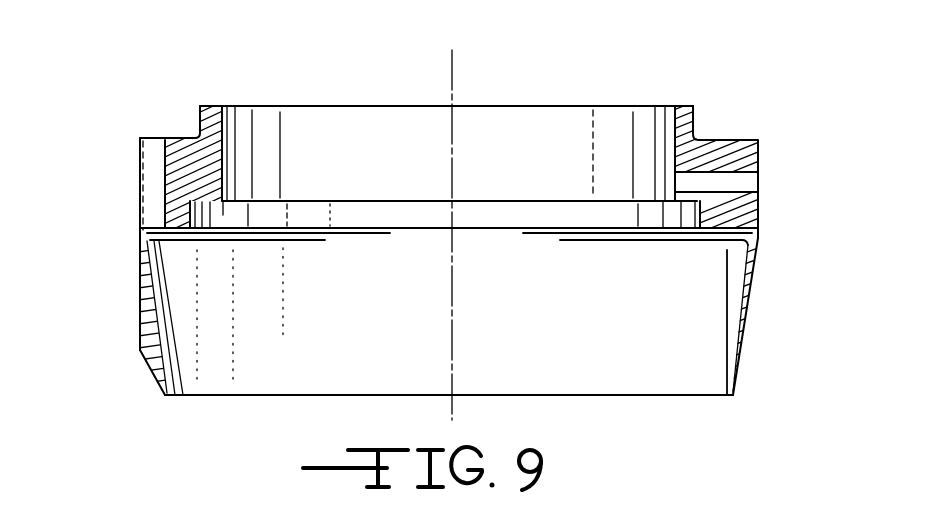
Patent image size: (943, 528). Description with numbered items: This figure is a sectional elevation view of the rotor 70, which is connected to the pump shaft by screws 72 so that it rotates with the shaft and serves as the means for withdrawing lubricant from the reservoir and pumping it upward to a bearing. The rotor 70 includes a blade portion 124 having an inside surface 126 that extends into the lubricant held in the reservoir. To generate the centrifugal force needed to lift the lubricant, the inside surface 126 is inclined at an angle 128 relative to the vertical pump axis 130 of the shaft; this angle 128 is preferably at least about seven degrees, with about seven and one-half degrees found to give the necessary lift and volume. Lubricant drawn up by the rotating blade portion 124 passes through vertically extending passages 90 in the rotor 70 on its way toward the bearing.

The vertically extending passages 90 is at (152, 153).
The vertical pump axis 130 is at (455, 73).
The screws 72 is at (743, 180).
The rotor 70 is at (752, 336).
The angle 128 is at (732, 252).
The inside surface 126 is at (150, 292).
The blade portion 124 is at (140, 318).